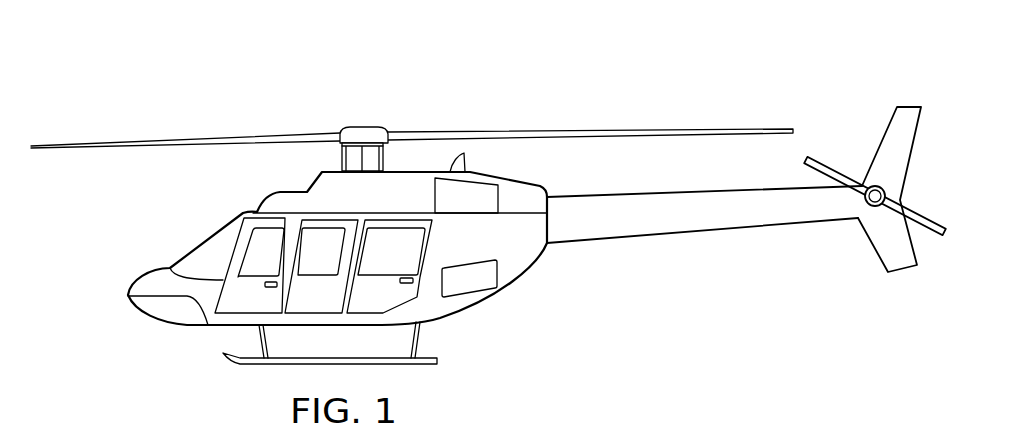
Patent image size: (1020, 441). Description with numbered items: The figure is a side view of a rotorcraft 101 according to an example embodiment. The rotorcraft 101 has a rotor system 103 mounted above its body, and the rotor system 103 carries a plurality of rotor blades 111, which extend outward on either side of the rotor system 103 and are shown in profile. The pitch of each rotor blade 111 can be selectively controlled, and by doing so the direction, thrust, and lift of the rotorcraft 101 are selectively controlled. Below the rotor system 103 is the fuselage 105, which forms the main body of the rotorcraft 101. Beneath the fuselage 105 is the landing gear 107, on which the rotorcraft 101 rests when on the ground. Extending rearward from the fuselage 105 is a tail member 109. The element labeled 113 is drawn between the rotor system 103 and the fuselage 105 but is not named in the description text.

The rotorcraft 101 is at (215, 63).
The rotor system 103 is at (359, 108).
The fuselage 105 is at (184, 326).
The landing gear 107 is at (437, 360).
The tail member 109 is at (703, 233).
The rotor blade 111 is at (563, 131).
The mast 113 is at (338, 151).